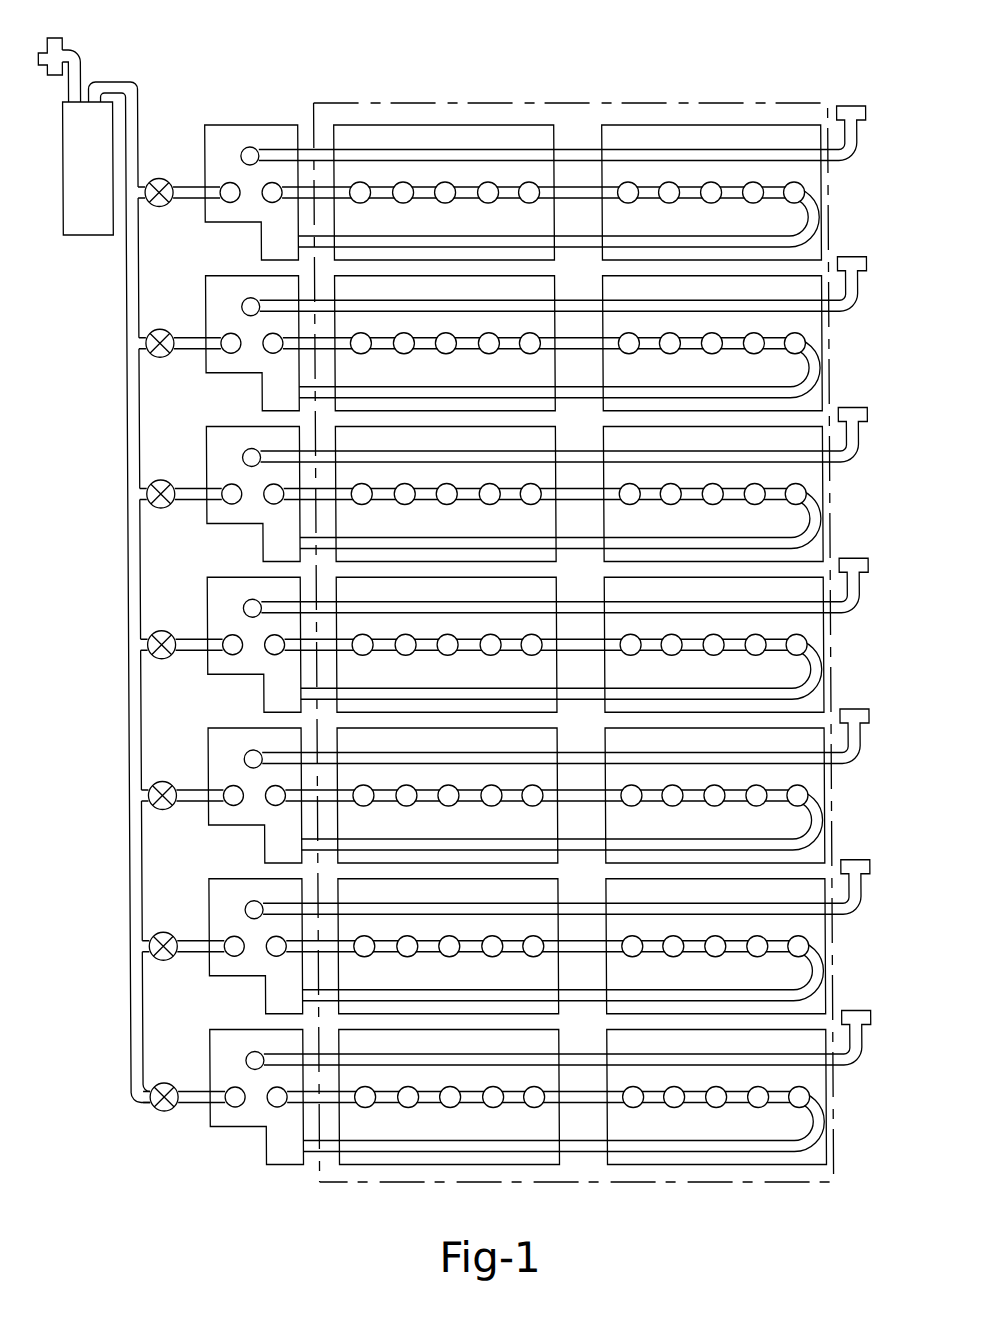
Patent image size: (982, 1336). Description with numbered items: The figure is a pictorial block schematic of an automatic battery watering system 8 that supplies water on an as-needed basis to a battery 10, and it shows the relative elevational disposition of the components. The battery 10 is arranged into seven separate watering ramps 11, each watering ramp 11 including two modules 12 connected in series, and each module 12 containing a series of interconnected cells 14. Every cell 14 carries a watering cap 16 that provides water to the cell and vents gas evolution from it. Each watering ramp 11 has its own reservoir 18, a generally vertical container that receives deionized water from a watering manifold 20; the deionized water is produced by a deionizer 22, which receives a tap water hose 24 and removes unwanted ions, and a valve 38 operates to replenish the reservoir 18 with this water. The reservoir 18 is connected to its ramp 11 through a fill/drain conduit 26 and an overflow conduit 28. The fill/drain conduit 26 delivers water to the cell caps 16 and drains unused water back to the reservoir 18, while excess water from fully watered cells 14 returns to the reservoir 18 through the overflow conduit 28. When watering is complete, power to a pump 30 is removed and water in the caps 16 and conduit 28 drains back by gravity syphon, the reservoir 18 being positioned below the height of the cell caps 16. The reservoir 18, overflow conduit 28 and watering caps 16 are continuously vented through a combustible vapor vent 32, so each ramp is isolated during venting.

The automatic battery watering system 8 is at (353, 78).
The battery 10 is at (613, 101).
The watering ramp 11 is at (576, 1160).
The module 12 is at (481, 1160).
The cell 14 is at (810, 1157).
The watering cap 16 is at (710, 1108).
The reservoir 18 is at (223, 878).
The watering manifold 20 is at (125, 380).
The deionizer 22 is at (81, 228).
The tap water hose 24 is at (40, 38).
The fill/drain conduit 26 is at (306, 1156).
The overflow conduit 28 is at (356, 1062).
The pump 30 is at (273, 1152).
The combustible vapor vent 32 is at (857, 141).
The valve 38 is at (158, 932).